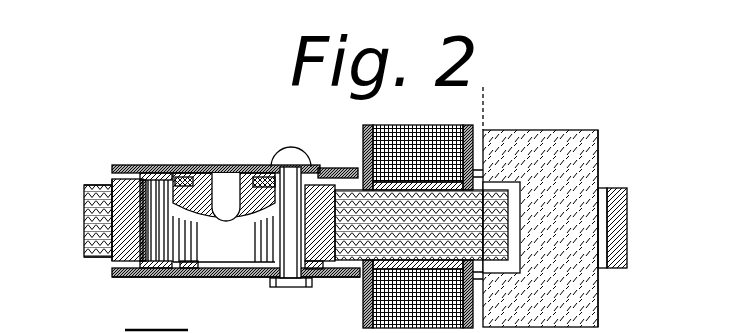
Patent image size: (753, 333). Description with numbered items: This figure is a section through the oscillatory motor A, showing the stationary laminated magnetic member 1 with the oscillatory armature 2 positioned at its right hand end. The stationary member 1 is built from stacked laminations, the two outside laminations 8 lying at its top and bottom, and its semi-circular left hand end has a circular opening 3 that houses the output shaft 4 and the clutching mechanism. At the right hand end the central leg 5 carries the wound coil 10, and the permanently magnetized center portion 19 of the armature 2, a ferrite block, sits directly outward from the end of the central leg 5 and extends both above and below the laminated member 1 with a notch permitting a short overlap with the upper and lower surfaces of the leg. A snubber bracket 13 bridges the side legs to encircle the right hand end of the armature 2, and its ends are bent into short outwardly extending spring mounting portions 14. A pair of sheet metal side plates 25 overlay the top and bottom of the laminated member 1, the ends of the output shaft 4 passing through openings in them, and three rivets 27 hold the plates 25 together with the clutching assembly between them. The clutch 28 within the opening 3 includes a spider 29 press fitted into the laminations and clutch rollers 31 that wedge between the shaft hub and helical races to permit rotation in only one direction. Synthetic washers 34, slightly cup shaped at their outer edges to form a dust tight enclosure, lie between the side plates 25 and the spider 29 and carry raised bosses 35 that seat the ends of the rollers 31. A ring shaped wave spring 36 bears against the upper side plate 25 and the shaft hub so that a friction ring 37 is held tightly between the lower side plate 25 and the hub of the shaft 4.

The stationary laminated magnetic member 1 is at (353, 184).
The second magnetic member 2 is at (584, 130).
The circular opening 3 is at (112, 259).
The output shaft 4 is at (205, 172).
The central leg 5 is at (500, 180).
The outside laminations 8 is at (85, 185).
The wound coil 10 is at (385, 125).
The snubber bracket 13 is at (627, 200).
The spring mounting portion 14 is at (604, 190).
The permanently magnetized center portion 19 is at (598, 150).
The sheet metal side plates 25 is at (345, 278).
The rivets 27 is at (290, 150).
The clutch 28 is at (111, 178).
The spider 29 is at (88, 218).
The clutch rollers 31 is at (159, 175).
The washers 34 is at (116, 273).
The raised bosses 35 is at (152, 172).
The ring shaped wave spring 36 is at (262, 177).
The friction ring 37 is at (263, 280).
The oscillatory motor A is at (642, 273).